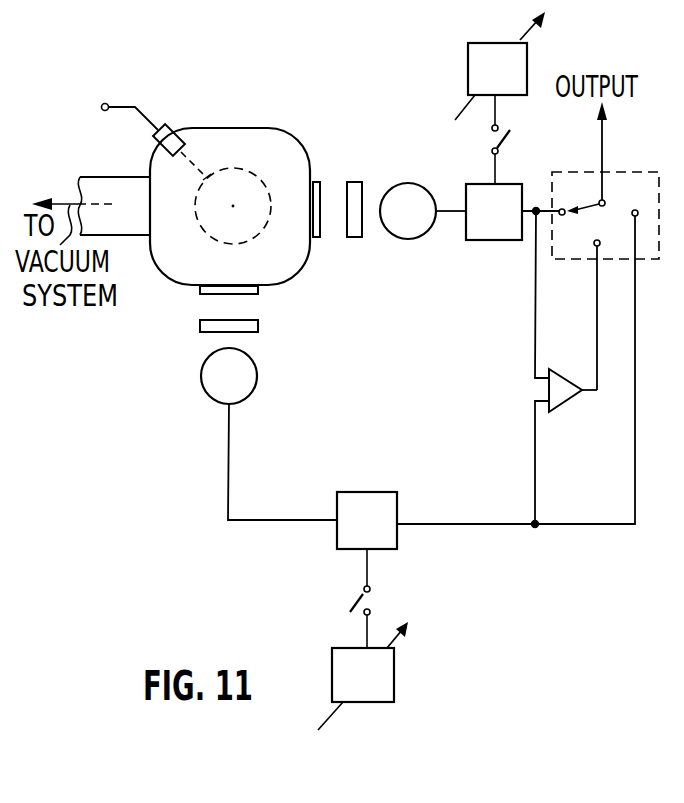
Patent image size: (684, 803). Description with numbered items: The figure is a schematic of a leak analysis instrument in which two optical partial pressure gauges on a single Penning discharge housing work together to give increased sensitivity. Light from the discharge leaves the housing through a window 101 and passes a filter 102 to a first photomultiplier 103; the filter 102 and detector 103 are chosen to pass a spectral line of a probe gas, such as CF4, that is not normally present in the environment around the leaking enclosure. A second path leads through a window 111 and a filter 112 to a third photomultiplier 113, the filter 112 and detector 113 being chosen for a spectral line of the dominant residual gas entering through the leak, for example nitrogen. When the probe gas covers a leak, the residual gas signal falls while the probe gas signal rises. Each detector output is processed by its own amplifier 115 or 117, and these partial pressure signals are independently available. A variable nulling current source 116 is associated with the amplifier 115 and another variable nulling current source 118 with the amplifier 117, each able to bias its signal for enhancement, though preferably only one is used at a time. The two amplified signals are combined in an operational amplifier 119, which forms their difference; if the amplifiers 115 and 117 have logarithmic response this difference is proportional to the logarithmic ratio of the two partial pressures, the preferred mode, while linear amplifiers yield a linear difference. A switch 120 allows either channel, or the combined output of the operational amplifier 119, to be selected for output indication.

The window 101 is at (258, 293).
The filter 102 is at (200, 323).
The first photomultiplier 103 is at (201, 386).
The window 111 is at (316, 180).
The filter 112 is at (355, 181).
The third photomultiplier 113 is at (409, 183).
The amplifier 115 is at (376, 492).
The variable nulling current source 116 is at (394, 685).
The amplifier 117 is at (489, 240).
The variable nulling current source 118 is at (527, 60).
The operational amplifier 119 is at (570, 400).
The switch 120 is at (610, 172).